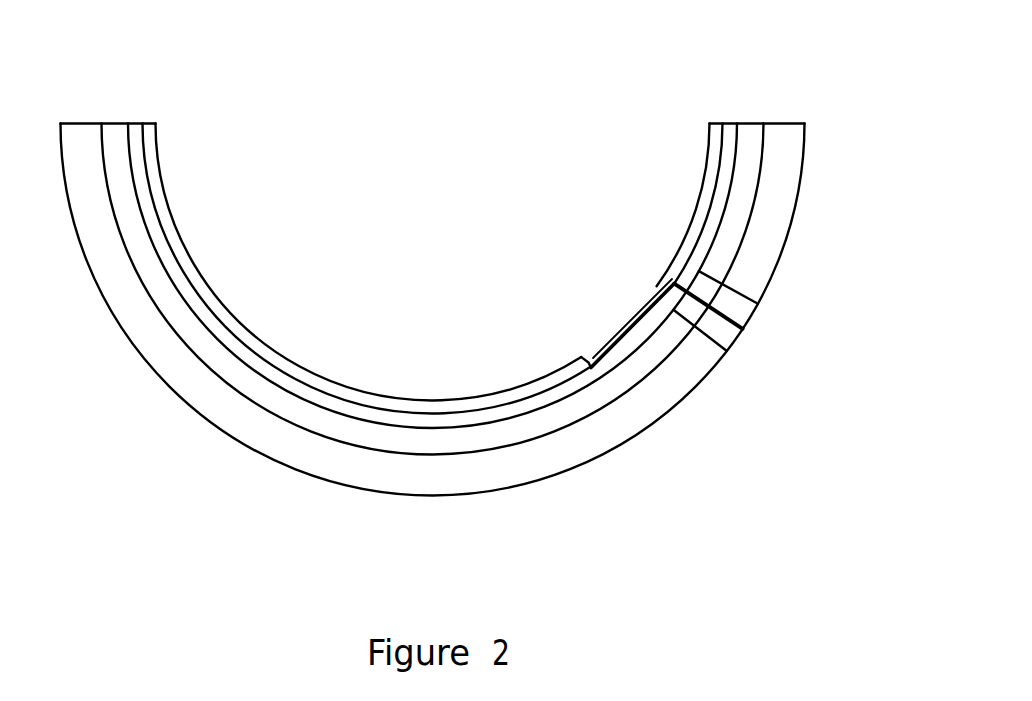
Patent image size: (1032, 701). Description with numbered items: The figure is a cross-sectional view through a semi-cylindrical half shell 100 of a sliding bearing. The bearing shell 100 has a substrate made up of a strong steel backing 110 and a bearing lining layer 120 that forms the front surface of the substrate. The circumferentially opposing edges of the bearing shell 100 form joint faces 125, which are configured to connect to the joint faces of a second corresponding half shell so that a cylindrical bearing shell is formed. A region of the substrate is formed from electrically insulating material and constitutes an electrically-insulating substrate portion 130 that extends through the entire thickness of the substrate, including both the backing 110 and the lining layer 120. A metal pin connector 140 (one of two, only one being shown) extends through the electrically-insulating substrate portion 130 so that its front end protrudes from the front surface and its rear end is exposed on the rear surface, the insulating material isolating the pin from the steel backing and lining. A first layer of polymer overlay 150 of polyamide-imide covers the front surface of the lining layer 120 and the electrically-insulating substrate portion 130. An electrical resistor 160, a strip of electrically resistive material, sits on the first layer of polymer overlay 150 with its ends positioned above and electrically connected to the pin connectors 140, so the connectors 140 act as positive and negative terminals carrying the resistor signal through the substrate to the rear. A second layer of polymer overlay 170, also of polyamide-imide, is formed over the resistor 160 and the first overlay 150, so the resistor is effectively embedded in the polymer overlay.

The half shell 100 is at (476, 291).
The backing 110 is at (672, 385).
The bearing lining layer 120 is at (608, 388).
The joint faces 125 is at (112, 121).
The electrically-insulating substrate portion 130 is at (736, 309).
The metal pin connector 140 is at (731, 331).
The first layer of polymer overlay 150 is at (275, 377).
The electrical resistor 160 is at (638, 331).
The second layer of polymer overlay 170 is at (202, 288).